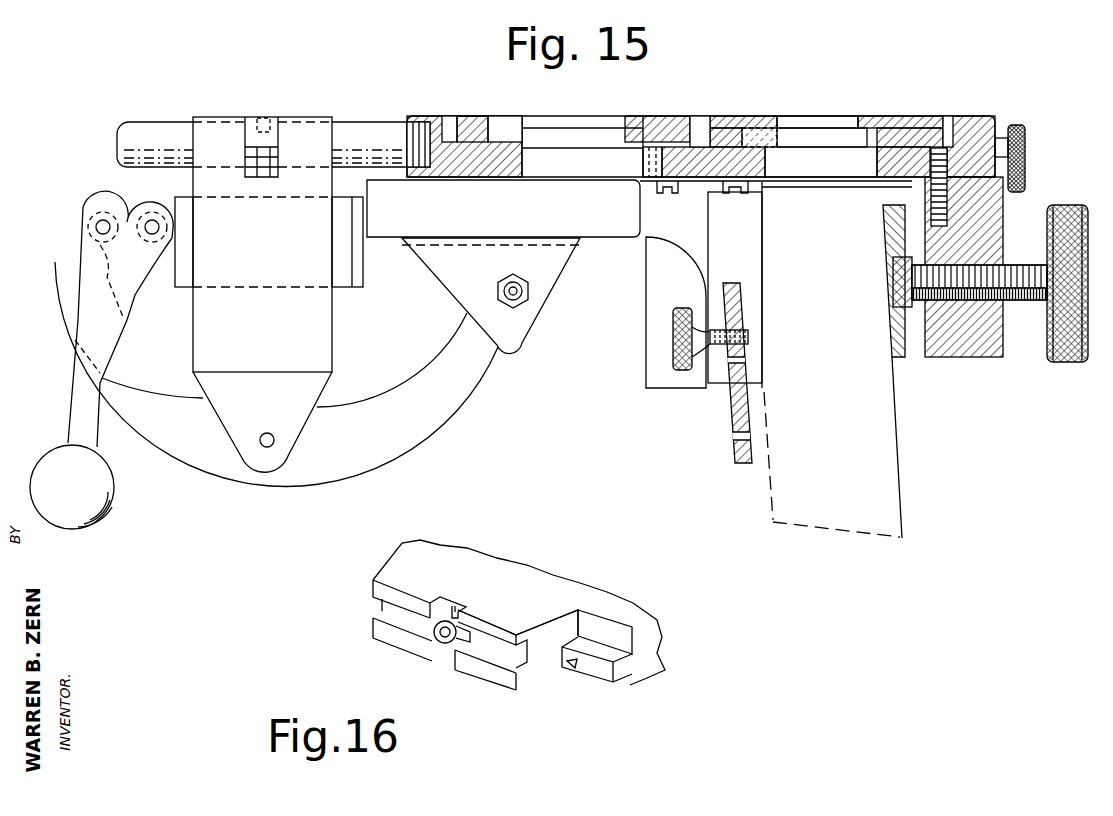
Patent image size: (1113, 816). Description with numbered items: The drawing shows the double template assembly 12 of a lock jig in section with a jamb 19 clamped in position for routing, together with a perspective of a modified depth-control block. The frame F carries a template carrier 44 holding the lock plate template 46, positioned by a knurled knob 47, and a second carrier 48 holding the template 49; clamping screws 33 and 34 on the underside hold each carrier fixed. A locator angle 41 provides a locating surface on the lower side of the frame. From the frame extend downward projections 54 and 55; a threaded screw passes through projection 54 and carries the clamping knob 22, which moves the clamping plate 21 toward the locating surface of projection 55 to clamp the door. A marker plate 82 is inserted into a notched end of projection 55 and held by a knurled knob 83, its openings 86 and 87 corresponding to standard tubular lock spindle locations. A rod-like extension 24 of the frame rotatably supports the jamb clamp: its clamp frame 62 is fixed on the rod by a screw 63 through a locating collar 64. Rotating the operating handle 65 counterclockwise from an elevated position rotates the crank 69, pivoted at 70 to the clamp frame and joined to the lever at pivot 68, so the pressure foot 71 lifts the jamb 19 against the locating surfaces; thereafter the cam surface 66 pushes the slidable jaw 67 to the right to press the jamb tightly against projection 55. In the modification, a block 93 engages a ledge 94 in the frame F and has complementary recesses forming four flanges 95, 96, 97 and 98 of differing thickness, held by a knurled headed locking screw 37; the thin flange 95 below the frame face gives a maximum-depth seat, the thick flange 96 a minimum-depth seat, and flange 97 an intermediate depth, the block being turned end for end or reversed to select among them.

In FIG. 15, the double template assembly 12 is at (939, 94).
In FIG. 15, the jamb 19 is at (610, 225).
In FIG. 15, the clamping plate 21 is at (884, 223).
In FIG. 15, the clamping knob 22 is at (1068, 360).
In FIG. 15, the supporting rod 24 is at (163, 130).
In FIG. 15, the clamping screw 33 is at (735, 194).
In FIG. 15, the clamping screw 34 is at (668, 194).
In FIG. 16, the knurled headed locking screw 37 is at (440, 646).
In FIG. 15, the locator angle 41 is at (583, 178).
In FIG. 15, the template carrier 44 is at (728, 117).
In FIG. 15, the template 46 is at (865, 117).
In FIG. 15, the knurled knob 47 is at (1020, 127).
In FIG. 15, the carrier 48 is at (675, 117).
In FIG. 15, the template 49 is at (510, 115).
In FIG. 15, the projection 54 is at (985, 355).
In FIG. 15, the projection 55 is at (682, 382).
In FIG. 15, the clamp frame 62 is at (297, 120).
In FIG. 15, the screw 63 is at (262, 117).
In FIG. 15, the locating collar 64 is at (272, 123).
In FIG. 15, the operating handle 65 is at (100, 483).
In FIG. 15, the cam surface 66 is at (172, 217).
In FIG. 15, the slidable jaw 67 is at (183, 260).
In FIG. 15, the pivot 68 is at (101, 222).
In FIG. 15, the crank 69 is at (232, 472).
In FIG. 15, the pivot 70 is at (270, 446).
In FIG. 15, the pressure foot 71 is at (515, 338).
In FIG. 15, the marker plate 82 is at (743, 465).
In FIG. 15, the knurled knob 83 is at (673, 330).
In FIG. 15, the opening 86 is at (750, 436).
In FIG. 15, the opening 87 is at (746, 360).
In FIG. 16, the block 93 is at (400, 567).
In FIG. 16, the ledge 94 is at (607, 672).
In FIG. 16, the flange 95 is at (570, 668).
In FIG. 16, the flange 96 is at (570, 617).
In FIG. 16, the flange 97 is at (517, 637).
In FIG. 16, the flange 98 is at (520, 683).
In FIG. 15, the frame F is at (427, 117).
In FIG. 16, the frame F is at (630, 608).